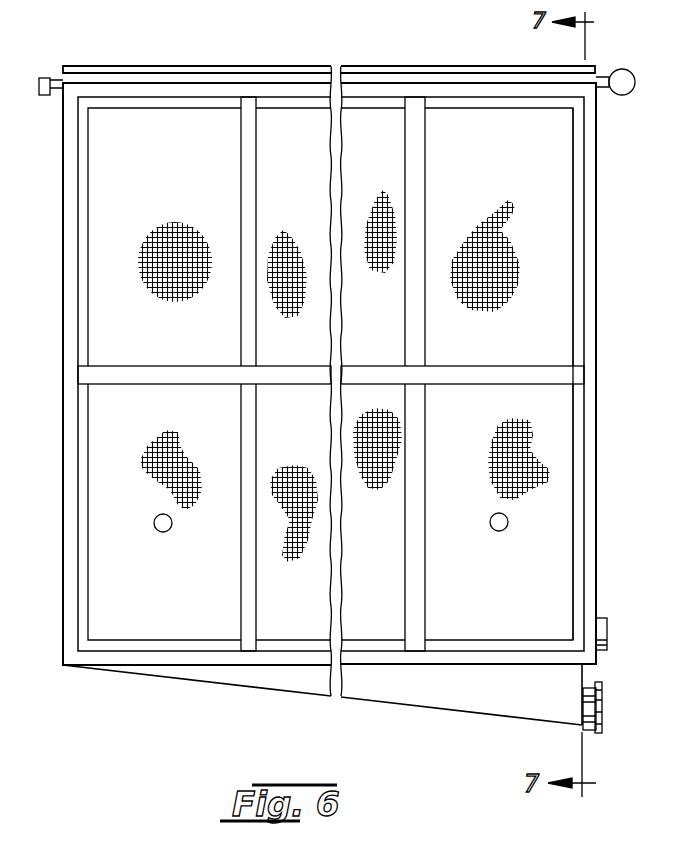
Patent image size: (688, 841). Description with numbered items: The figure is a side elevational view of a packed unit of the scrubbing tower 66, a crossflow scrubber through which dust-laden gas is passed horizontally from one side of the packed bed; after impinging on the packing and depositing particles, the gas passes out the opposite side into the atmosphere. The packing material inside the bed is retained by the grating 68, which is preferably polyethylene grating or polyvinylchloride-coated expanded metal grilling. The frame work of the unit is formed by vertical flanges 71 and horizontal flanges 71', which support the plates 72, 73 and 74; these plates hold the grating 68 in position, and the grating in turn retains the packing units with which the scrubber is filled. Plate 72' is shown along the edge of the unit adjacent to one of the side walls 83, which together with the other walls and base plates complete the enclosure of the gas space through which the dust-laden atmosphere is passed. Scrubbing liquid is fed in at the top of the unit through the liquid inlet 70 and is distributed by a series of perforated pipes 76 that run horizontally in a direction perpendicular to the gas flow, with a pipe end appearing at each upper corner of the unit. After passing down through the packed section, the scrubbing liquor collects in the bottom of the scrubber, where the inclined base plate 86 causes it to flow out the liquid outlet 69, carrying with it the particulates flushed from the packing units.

The scrubbing tower 66 is at (408, 66).
The grating 68 is at (295, 118).
The liquid outlet 69 is at (602, 724).
The liquid inlet 70 is at (632, 75).
The vertical flanges 71 is at (331, 374).
The horizontal flanges 71' is at (331, 373).
The plate 72 is at (457, 369).
The panel edge 72' is at (613, 374).
The plate 73 is at (252, 216).
The plate 74 is at (526, 375).
The perforated pipes 76 is at (56, 78).
The side walls 83 is at (78, 243).
The inclined base plate 86 is at (396, 705).